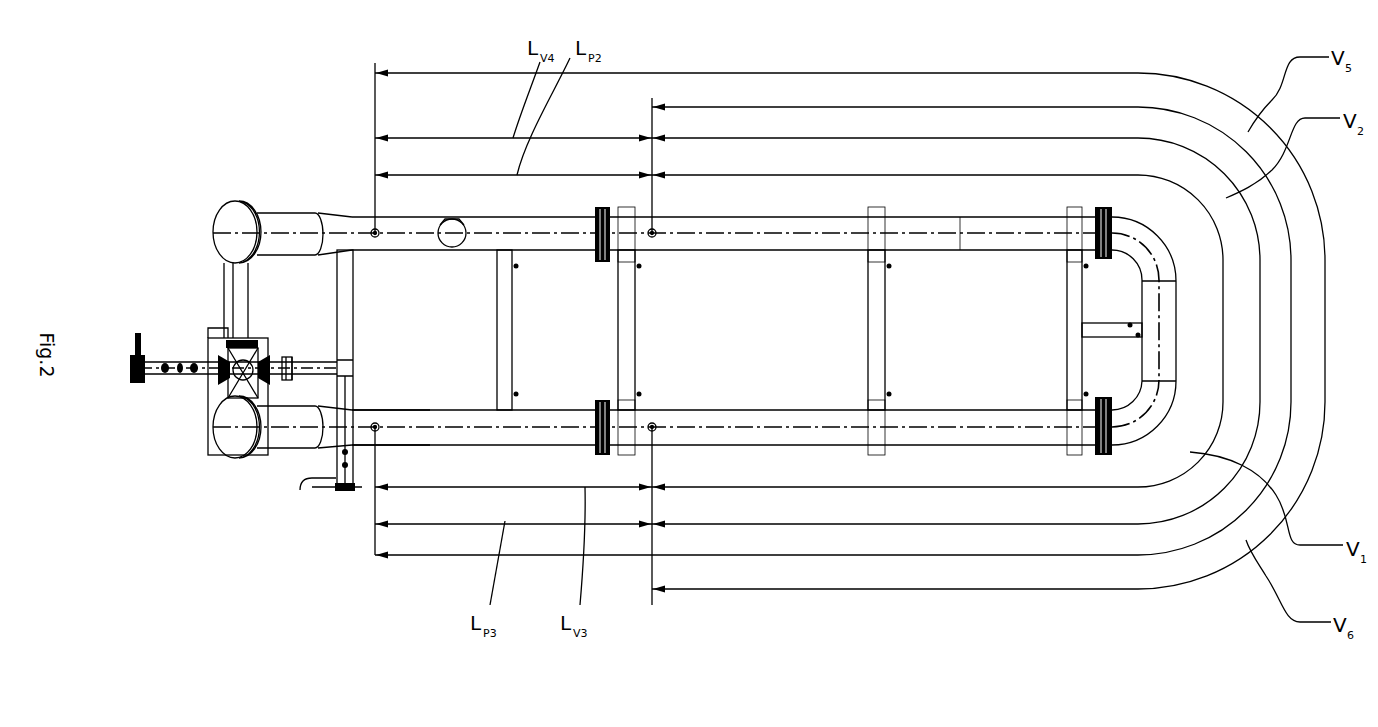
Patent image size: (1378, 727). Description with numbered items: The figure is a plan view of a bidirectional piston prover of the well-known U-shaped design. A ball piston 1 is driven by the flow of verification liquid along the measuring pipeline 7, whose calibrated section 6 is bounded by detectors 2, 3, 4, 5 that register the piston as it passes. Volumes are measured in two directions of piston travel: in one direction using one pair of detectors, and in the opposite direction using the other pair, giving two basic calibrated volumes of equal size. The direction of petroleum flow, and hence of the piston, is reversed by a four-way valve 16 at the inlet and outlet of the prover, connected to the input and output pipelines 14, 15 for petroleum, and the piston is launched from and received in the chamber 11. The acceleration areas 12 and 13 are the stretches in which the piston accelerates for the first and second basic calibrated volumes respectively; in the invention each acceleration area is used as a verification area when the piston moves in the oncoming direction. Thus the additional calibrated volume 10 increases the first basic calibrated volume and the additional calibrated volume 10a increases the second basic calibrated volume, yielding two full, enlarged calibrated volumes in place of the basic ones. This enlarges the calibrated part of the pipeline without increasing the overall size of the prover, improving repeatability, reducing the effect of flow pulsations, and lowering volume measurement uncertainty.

The ball piston 1 is at (457, 217).
The detector 2 is at (656, 230).
The detector 3 is at (375, 431).
The detector 4 is at (656, 432).
The detector 5 is at (372, 228).
The calibrated section of the measuring pipeline 6 is at (841, 220).
The measuring pipeline 7 is at (960, 217).
The additional calibrated volume 10 is at (537, 445).
The additional calibrated volume 10a is at (398, 217).
The chamber for launching/receiving a ball piston 11 is at (280, 433).
The acceleration area of the ball piston 12 is at (573, 217).
The acceleration area of the ball piston 13 is at (430, 445).
The input pipeline for petroleum 14 is at (300, 490).
The output pipeline for petroleum 15 is at (192, 378).
The 4-way valve 16 is at (222, 360).